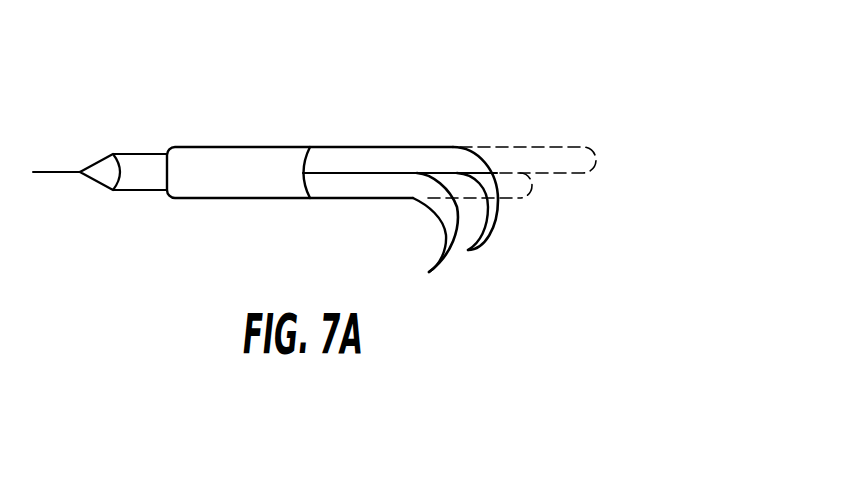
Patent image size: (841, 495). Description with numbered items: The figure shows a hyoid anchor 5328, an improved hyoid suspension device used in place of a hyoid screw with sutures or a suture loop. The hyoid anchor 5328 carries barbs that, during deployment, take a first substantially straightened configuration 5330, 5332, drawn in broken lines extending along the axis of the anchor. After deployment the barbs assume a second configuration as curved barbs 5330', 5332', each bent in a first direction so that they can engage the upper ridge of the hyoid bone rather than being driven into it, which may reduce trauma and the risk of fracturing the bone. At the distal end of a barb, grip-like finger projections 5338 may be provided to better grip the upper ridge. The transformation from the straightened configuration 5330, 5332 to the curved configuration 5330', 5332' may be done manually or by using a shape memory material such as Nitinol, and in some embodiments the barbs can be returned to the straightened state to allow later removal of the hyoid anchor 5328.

The hyoid anchor 5328 is at (602, 108).
The first substantially straightened configuration of barb 5330 is at (528, 105).
The barb in curved configuration 5330' is at (538, 248).
The first substantially straightened configuration of barb 5332 is at (567, 193).
The barb in curved configuration 5332' is at (351, 224).
The grip-like finger projections 5338 is at (445, 230).